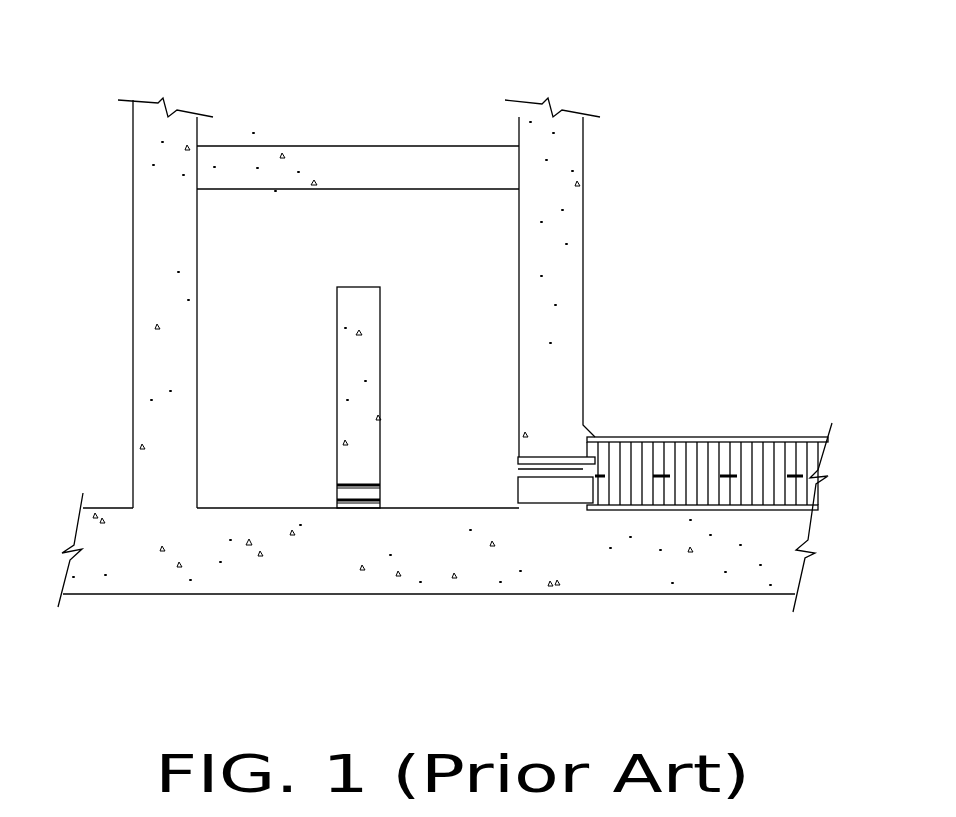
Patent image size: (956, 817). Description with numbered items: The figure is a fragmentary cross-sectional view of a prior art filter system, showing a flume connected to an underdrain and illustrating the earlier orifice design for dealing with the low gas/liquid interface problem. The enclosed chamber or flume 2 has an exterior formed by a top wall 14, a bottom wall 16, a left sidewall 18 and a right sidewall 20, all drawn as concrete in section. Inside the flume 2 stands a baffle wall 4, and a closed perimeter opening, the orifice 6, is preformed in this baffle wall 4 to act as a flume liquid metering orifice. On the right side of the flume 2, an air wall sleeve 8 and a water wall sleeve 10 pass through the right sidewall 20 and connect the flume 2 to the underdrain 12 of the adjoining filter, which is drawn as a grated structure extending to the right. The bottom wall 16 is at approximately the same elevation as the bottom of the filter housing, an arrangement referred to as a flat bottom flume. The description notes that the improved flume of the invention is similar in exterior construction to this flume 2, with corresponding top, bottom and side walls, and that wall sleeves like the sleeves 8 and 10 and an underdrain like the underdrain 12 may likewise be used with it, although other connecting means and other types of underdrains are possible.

The flume 2 is at (218, 560).
The baffle wall 4 is at (375, 322).
The orifice 6 is at (350, 484).
The air wall sleeve 8 is at (556, 456).
The water wall sleeve 10 is at (537, 503).
The underdrain 12 is at (725, 437).
The top wall 14 is at (366, 160).
The bottom wall 16 is at (367, 592).
The left sidewall 18 is at (140, 290).
The right sidewall 20 is at (568, 298).